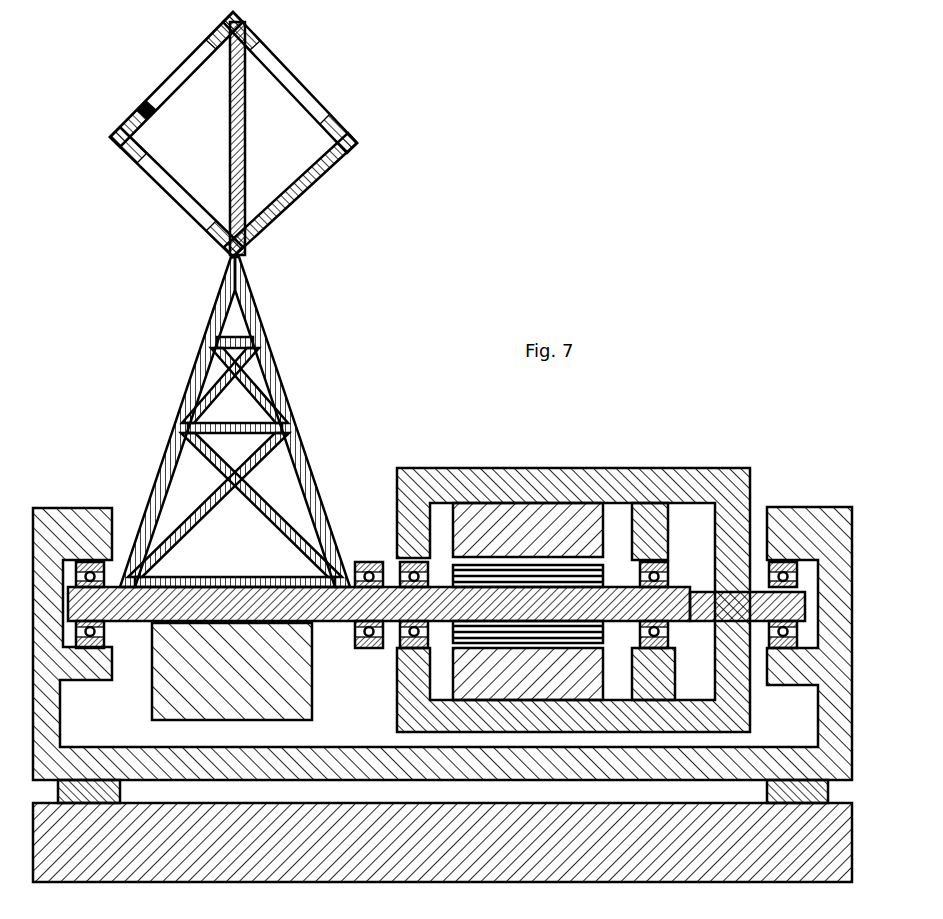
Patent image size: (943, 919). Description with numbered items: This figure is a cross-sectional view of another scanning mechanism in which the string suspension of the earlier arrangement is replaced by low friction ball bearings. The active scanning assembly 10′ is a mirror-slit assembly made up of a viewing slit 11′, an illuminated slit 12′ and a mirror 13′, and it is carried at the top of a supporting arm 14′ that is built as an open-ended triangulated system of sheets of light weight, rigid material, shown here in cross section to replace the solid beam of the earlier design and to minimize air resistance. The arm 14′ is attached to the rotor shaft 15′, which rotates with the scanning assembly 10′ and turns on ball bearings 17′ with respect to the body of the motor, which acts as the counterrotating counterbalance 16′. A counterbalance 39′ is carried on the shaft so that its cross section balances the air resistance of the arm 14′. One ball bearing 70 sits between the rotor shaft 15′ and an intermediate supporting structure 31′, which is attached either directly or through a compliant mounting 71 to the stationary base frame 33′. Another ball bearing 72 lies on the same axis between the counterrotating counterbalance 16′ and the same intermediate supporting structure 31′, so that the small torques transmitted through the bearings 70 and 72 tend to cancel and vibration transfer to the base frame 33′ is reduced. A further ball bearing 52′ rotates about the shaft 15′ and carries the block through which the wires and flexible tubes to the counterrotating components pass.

The mirror-slit assembly 10′ is at (270, 233).
The viewing slit 11′ is at (318, 92).
The illuminated slit 12′ is at (166, 78).
The mirror 13′ is at (229, 160).
The supporting arm 14′ is at (293, 407).
The rotor shaft 15′ is at (330, 625).
The counterrotating counterbalance (body of motor) 16′ is at (462, 466).
The ball bearings 17′ is at (393, 572).
The intermediate supporting structure 31′ is at (50, 506).
The base frame 33′ is at (660, 805).
The counterbalance 39′ is at (313, 695).
The ball bearing 52′ is at (362, 560).
The ball bearing 70 is at (110, 562).
The compliant mounting 71 is at (120, 796).
The ball bearing 72 is at (770, 573).